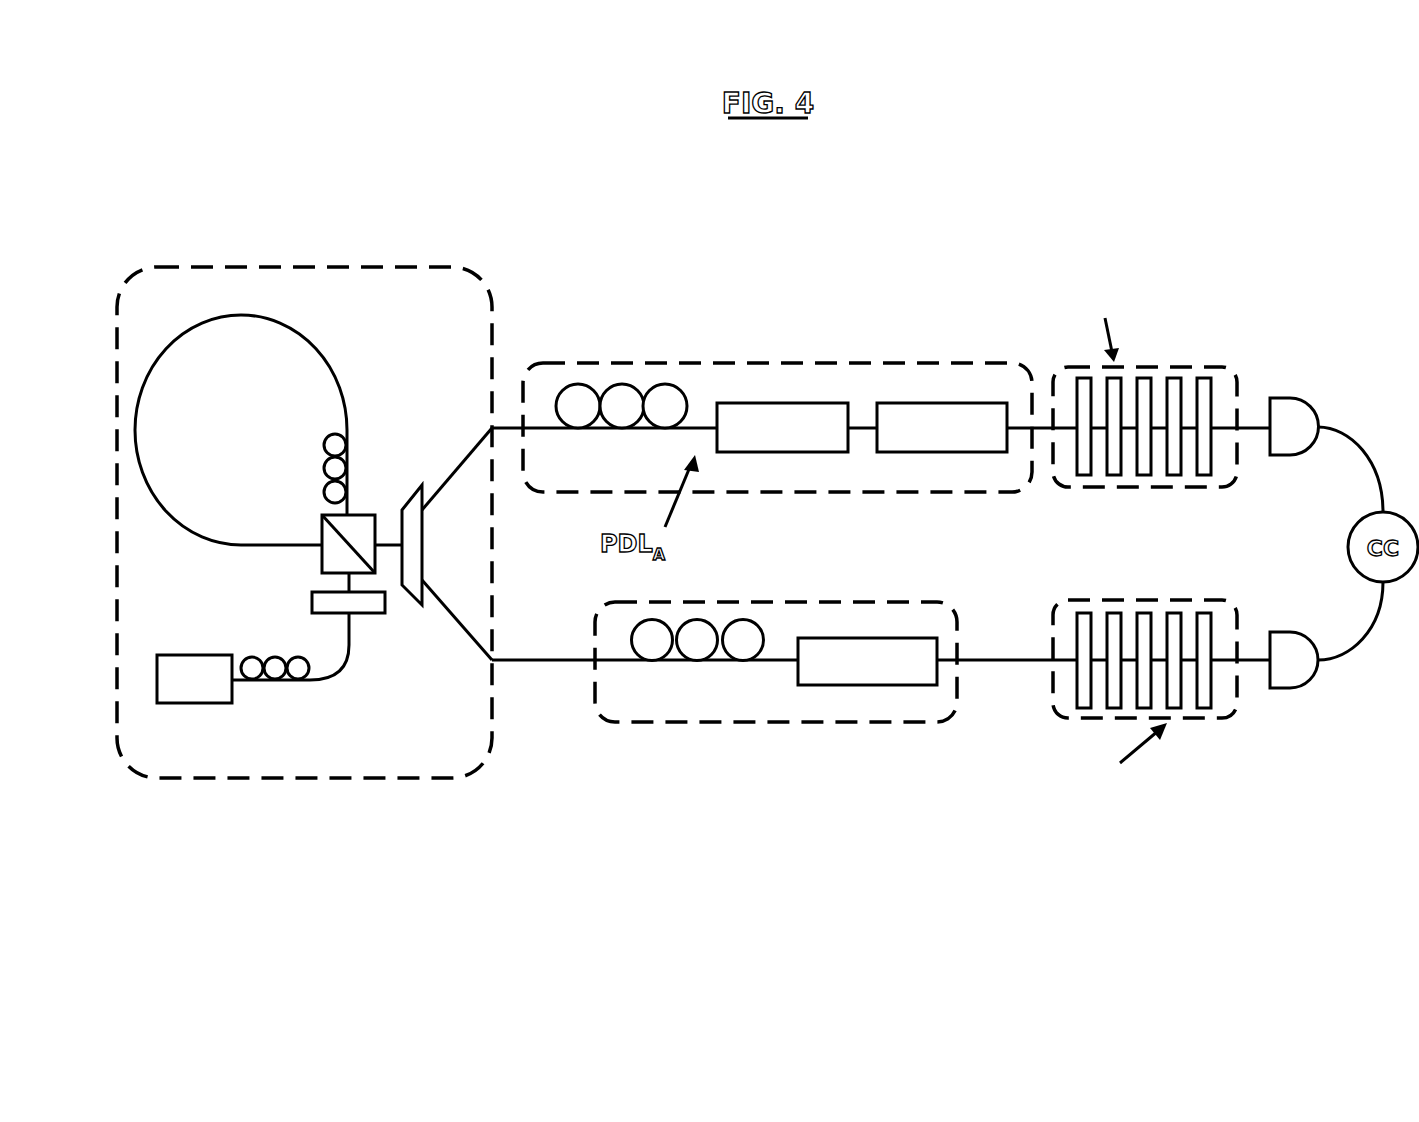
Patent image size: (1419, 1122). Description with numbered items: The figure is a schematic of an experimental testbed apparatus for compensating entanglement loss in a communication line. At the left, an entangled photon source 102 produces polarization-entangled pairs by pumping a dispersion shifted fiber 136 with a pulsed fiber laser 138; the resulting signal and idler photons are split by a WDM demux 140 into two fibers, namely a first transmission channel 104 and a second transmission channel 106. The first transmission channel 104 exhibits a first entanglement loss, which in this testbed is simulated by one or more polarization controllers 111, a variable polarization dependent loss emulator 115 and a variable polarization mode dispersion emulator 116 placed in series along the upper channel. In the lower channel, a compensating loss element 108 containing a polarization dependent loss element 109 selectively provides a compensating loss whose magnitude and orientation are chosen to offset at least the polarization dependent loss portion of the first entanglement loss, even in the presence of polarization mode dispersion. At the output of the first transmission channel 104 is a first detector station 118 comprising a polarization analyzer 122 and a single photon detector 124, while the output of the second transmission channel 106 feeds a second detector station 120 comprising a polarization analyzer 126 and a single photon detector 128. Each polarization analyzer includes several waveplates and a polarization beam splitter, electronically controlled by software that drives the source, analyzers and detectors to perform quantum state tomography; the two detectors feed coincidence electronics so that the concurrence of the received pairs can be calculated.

The entangled photon source 102 is at (348, 278).
The dispersion shifted fiber 136 is at (307, 340).
The pulsed fiber laser 138 is at (187, 703).
The WDM demux 140 is at (405, 585).
The first transmission channel 104 is at (703, 428).
The polarization controller 111 is at (578, 384).
The variable PDL emulator 115 is at (812, 403).
The variable PMD emulator 116 is at (925, 403).
The polarization analyzer 122 is at (1130, 365).
The first detector station 118 is at (1260, 343).
The single photon detector 124 is at (1303, 455).
The second transmission channel 106 is at (523, 660).
The compensating loss element 108 is at (717, 752).
The compensating PDL element 109 is at (802, 722).
The polarization analyzer 126 is at (1052, 677).
The second detector station 120 is at (1219, 751).
The single photon detector 128 is at (1292, 688).